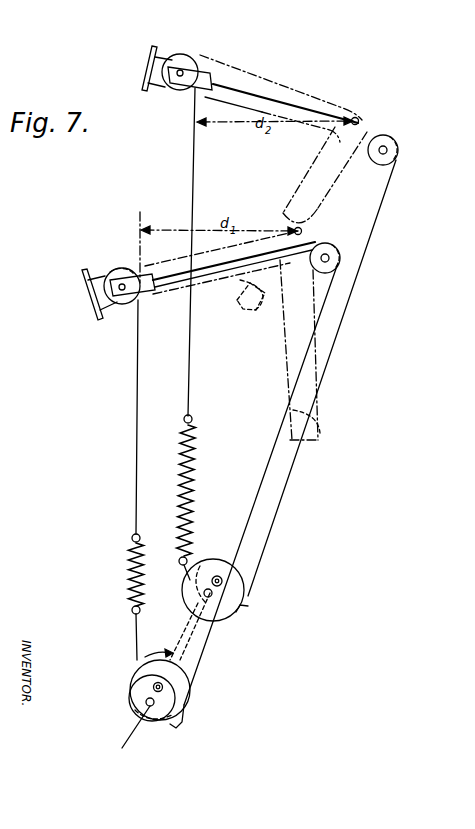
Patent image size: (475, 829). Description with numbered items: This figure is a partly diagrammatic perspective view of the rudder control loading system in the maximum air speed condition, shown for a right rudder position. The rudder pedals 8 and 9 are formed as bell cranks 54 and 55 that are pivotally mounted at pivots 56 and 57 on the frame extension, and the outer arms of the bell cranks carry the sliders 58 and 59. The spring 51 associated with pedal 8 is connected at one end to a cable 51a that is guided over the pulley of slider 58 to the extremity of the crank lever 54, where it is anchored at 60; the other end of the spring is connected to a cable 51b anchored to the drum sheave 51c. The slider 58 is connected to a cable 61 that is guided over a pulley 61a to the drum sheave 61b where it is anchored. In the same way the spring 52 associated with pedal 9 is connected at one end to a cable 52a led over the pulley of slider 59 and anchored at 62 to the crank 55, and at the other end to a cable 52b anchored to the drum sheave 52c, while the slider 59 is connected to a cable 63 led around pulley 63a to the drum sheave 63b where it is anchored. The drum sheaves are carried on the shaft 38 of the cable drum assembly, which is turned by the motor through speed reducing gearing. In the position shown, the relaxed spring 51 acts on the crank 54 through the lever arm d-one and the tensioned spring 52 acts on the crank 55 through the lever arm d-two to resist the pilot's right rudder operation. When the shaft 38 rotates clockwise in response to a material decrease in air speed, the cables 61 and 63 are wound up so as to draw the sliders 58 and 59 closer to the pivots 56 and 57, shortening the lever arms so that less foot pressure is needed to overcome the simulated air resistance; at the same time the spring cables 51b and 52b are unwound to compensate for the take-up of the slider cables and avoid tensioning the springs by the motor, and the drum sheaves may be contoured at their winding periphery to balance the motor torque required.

The rudder pedal 8 is at (322, 434).
The rudder pedal 9 is at (253, 311).
The shaft 38 is at (140, 722).
The spring 51 is at (128, 575).
The cable 51a is at (120, 272).
The cable 51b is at (134, 632).
The drum sheave 51c is at (133, 676).
The spring 52 is at (197, 435).
The cable 52a is at (190, 376).
The cable 52b is at (193, 583).
The drum sheave 52c is at (232, 616).
The bell crank 54 is at (210, 292).
The bell crank 55 is at (327, 104).
The pivot 56 is at (306, 230).
The pivot 57 is at (362, 120).
The slider 58 is at (147, 294).
The slider 59 is at (205, 66).
The anchor 60 is at (105, 288).
The cable 61 is at (278, 470).
The pulley 61a is at (342, 258).
The drum sheave 61b is at (178, 725).
The anchor 62 is at (150, 52).
The cable 63 is at (262, 94).
The pulley 63a is at (400, 150).
The drum sheave 63b is at (246, 573).